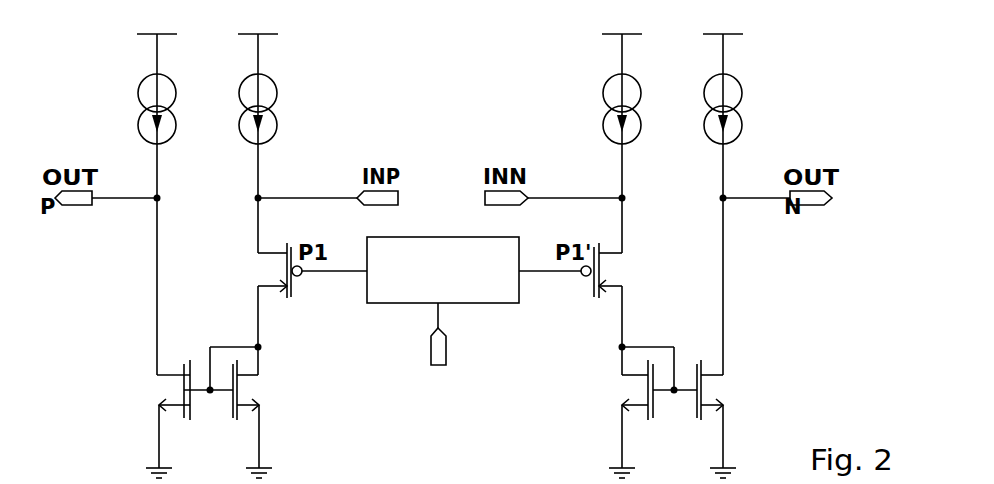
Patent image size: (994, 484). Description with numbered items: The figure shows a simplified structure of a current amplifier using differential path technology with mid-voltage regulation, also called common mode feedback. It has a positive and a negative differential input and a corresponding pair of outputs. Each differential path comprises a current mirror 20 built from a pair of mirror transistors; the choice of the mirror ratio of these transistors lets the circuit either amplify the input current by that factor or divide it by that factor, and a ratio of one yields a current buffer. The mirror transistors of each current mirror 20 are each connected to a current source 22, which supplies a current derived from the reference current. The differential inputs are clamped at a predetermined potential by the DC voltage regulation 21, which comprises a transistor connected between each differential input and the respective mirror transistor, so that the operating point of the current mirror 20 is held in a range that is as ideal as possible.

The current mirror 20 is at (133, 376).
The DC voltage regulation 21 is at (401, 296).
The current source 22 is at (230, 104).